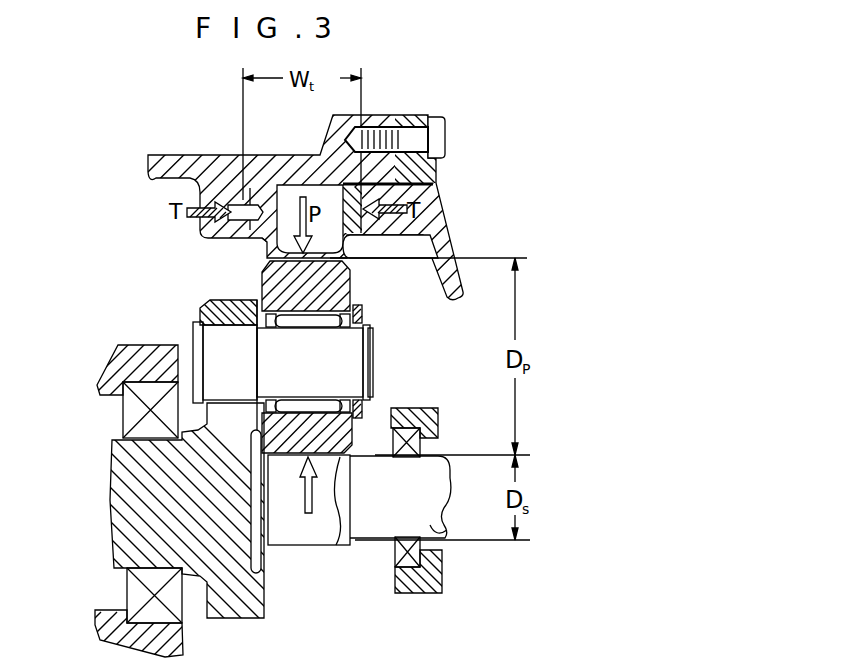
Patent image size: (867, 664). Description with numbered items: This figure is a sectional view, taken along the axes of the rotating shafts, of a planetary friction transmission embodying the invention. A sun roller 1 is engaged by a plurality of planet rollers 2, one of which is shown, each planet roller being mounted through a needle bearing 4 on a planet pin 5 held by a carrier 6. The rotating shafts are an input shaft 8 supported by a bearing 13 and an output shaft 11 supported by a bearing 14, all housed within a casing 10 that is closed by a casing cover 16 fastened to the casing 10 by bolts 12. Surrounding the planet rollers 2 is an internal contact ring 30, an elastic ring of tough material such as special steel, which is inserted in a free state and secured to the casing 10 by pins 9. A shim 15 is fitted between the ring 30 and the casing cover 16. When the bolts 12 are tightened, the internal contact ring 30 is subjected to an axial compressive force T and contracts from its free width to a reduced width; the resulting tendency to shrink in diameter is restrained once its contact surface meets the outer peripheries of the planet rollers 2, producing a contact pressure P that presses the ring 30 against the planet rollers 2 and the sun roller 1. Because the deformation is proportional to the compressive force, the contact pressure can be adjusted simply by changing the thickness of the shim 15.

The sun roller 1 is at (318, 535).
The planet roller 2 is at (342, 535).
The needle bearing 4 is at (293, 410).
The planet pin 5 is at (217, 350).
The carrier 6 is at (217, 309).
The input shaft 8 is at (430, 523).
The pin 9 is at (237, 208).
The casing 10 is at (290, 157).
The output shaft 11 is at (126, 462).
The bolt 12 is at (372, 127).
The bearing 13 is at (420, 592).
The bearing 14 is at (133, 594).
The shim 15 is at (390, 193).
The casing cover 16 is at (408, 118).
The internal contact ring 30 is at (256, 229).